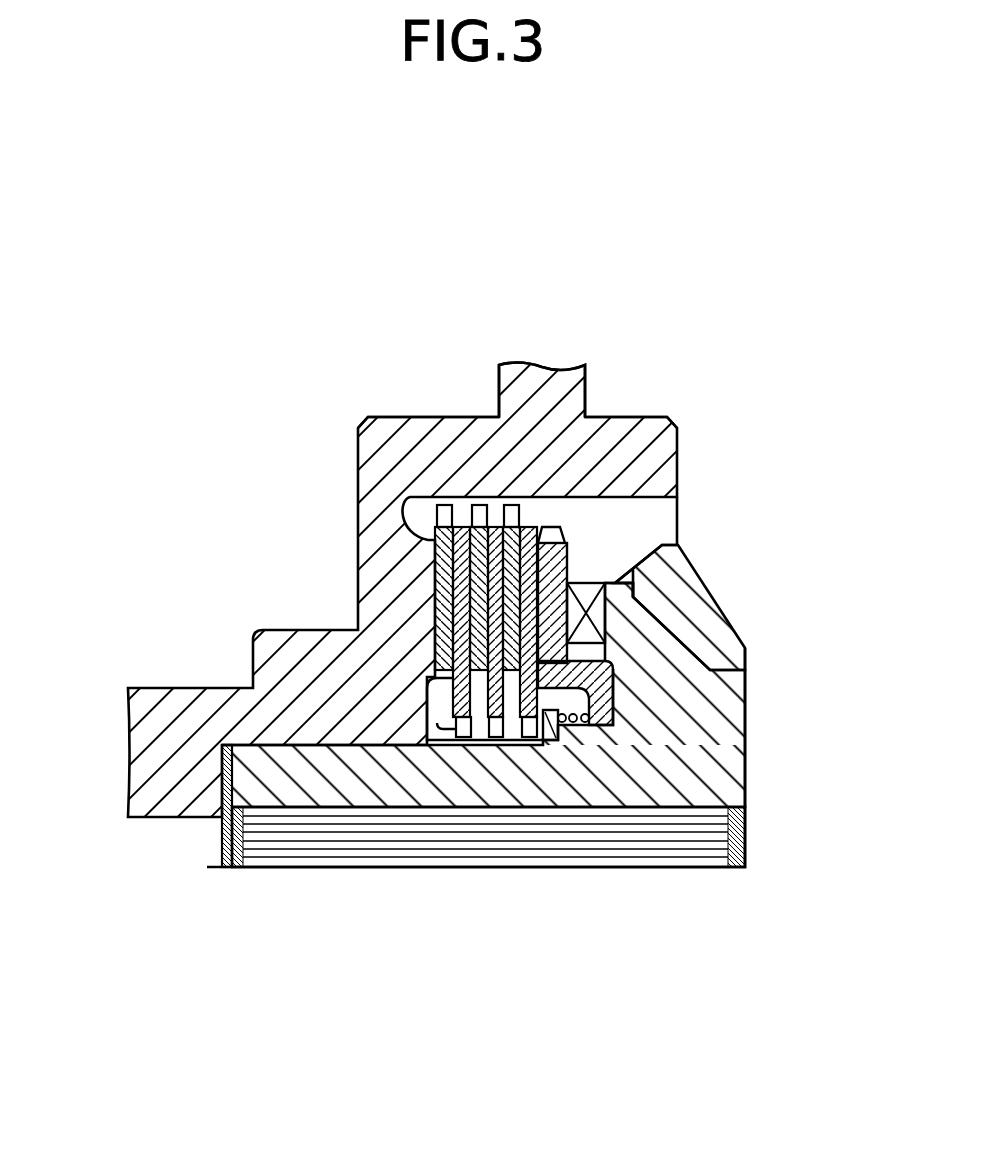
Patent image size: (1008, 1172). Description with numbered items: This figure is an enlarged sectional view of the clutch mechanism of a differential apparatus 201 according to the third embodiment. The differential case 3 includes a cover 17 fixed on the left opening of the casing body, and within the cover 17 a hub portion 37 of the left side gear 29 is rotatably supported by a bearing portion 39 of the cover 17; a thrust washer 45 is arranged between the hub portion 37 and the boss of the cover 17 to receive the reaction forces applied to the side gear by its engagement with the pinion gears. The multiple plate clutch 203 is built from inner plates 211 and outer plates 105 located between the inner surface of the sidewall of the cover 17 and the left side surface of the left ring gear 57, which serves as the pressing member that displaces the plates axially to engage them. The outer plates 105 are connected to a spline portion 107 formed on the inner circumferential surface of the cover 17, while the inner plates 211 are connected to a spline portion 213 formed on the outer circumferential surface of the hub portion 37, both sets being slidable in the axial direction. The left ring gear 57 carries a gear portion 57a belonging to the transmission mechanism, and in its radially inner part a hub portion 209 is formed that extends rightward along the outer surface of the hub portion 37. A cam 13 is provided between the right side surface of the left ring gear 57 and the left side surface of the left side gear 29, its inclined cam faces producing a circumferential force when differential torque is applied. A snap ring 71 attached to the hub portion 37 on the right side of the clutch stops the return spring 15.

The differential apparatus 201 is at (330, 292).
The multiple plate clutch 203 is at (427, 411).
The cover 17 is at (542, 285).
The differential case 3 is at (550, 355).
The spline portion 107 is at (460, 507).
The outer plates 105 is at (387, 576).
The inner plates 211 is at (443, 685).
The gear portion 57a is at (555, 533).
The left ring gear 57 is at (631, 513).
The cam 13 is at (600, 558).
The left side gear 29 is at (698, 617).
The hub portion 209 is at (617, 710).
The bearing portion 39 is at (272, 756).
The hub portion 37 is at (683, 793).
The thrust washer 45 is at (236, 872).
The spline portion 213 is at (470, 743).
The snap ring 71 is at (563, 740).
The return spring 15 is at (600, 745).